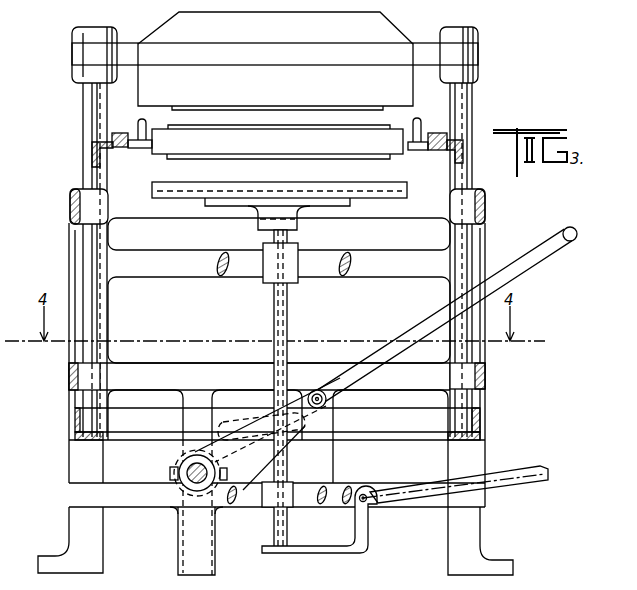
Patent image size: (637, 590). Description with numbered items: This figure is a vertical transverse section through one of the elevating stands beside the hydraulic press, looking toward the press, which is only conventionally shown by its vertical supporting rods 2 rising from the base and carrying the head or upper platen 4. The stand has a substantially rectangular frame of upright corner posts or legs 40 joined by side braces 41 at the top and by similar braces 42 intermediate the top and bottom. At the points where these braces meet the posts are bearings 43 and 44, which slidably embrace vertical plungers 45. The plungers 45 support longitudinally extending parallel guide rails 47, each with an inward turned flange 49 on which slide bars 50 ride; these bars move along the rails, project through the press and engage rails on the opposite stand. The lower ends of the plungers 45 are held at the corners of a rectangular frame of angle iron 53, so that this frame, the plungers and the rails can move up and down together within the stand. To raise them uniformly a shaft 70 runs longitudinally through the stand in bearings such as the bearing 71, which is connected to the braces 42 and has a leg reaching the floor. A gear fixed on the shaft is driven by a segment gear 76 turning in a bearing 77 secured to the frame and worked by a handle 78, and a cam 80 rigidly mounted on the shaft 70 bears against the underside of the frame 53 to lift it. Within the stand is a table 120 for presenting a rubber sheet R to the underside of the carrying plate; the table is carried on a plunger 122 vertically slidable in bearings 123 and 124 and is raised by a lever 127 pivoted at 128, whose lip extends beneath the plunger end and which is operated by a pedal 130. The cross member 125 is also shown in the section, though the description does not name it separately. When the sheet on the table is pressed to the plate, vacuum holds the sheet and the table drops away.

The vertical supporting rods 2 is at (453, 98).
The head or upper platen 4 is at (388, 50).
The upright corner posts or legs 40 is at (69, 254).
The side braces 41 is at (70, 206).
The braces 42 is at (69, 368).
The bearing 43 is at (468, 212).
The bearing 44 is at (476, 380).
The vertical plungers 45 is at (100, 176).
The guide rails 47 is at (92, 144).
The inward turned flange 49 is at (436, 130).
The slide bars 50 is at (114, 148).
The angle iron frame 53 is at (390, 436).
The shaft 70 is at (187, 485).
The bearing 71 is at (210, 545).
The segment gear 76 is at (270, 410).
The bearing 77 is at (318, 391).
The handle 78 is at (504, 273).
The cam 80 is at (186, 461).
The rubber sheet R is at (400, 183).
The table 120 is at (392, 206).
The plunger 122 is at (287, 320).
The bearing 123 is at (298, 258).
The bearing 124 is at (284, 506).
The cross member 125 is at (178, 277).
The lever 127 is at (370, 528).
The pivot 128 is at (368, 494).
The pedal 130 is at (536, 468).